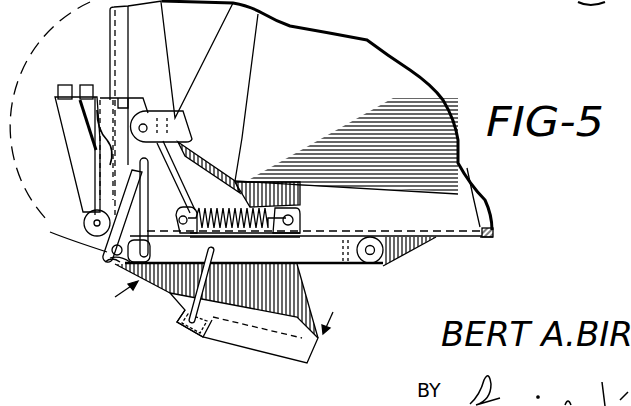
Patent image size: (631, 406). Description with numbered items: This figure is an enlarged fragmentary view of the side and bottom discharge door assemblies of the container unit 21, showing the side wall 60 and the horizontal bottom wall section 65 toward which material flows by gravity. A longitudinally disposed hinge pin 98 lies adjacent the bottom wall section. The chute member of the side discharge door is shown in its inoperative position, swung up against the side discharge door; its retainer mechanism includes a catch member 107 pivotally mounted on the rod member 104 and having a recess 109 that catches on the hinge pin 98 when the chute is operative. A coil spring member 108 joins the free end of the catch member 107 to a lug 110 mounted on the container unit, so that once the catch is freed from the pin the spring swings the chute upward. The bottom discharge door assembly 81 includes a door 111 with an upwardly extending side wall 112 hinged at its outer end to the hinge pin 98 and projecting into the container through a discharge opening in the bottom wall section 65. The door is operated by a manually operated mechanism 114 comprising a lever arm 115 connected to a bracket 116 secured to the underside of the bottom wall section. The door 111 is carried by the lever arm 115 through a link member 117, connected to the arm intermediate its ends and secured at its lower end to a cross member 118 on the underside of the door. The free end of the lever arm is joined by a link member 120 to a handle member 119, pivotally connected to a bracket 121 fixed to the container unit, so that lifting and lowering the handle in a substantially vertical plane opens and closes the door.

The container unit 21 is at (344, 118).
The side wall 60 is at (110, 50).
The horizontal bottom wall section 65 is at (450, 238).
The bottom discharge door assembly 81 is at (110, 299).
The hinge pin 98 is at (110, 268).
The rod member 104 is at (75, 238).
The catch member 107 is at (160, 200).
The coil spring member 108 is at (253, 203).
The recess 109 is at (95, 256).
The lug 110 is at (80, 127).
The door 111 is at (262, 340).
The side wall 112 is at (298, 322).
The manually operated mechanism 114 is at (252, 268).
The lever arm 115 is at (328, 265).
The bracket 116 is at (396, 263).
The link member 117 is at (187, 304).
The cross member 118 is at (204, 339).
The handle member 119 is at (120, 191).
The link member 120 is at (160, 205).
The bracket 121 is at (180, 128).